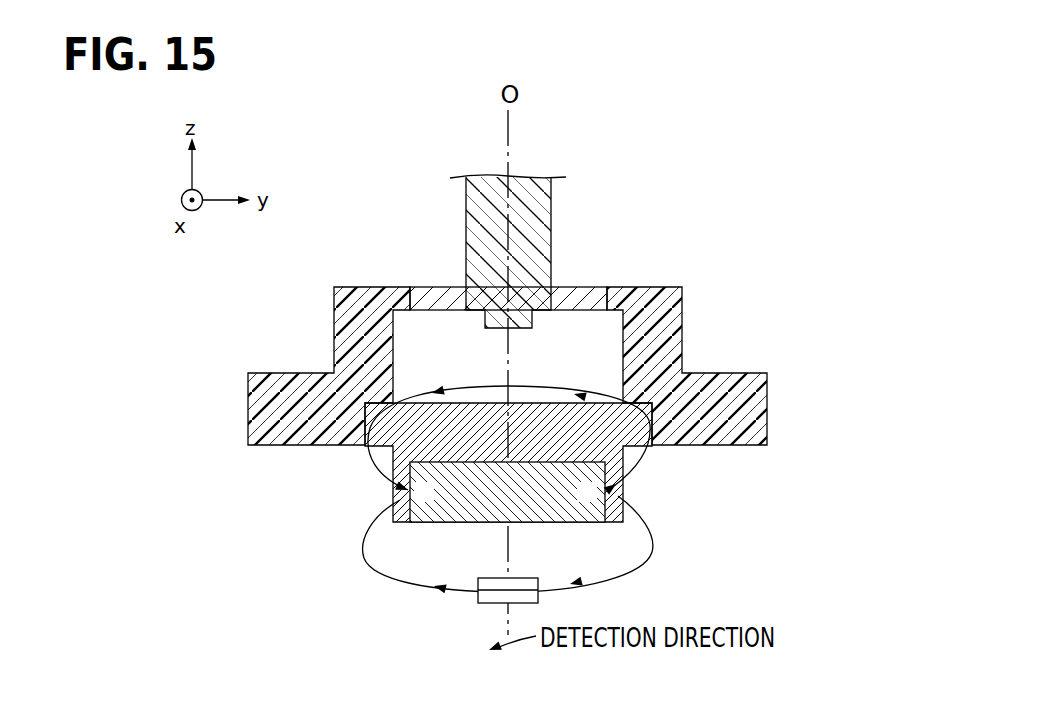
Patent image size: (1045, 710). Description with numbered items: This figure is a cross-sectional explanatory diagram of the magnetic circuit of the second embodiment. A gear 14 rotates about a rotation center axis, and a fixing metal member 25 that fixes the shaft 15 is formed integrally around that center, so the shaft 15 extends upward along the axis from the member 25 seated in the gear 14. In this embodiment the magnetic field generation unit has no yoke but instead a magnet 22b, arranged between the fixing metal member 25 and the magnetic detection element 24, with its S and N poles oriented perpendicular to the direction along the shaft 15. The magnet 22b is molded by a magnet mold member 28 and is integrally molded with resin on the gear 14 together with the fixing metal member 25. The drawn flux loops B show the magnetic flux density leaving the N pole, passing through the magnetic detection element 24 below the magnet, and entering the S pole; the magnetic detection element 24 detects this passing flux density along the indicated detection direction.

The shaft 15 is at (551, 221).
The fixing metal member 25 is at (570, 287).
The gear 14 is at (735, 373).
The magnet 22b is at (573, 522).
The magnet mold member 28 is at (625, 488).
The magnetic detection element 24 is at (520, 578).
The magnetic flux B is at (603, 573).